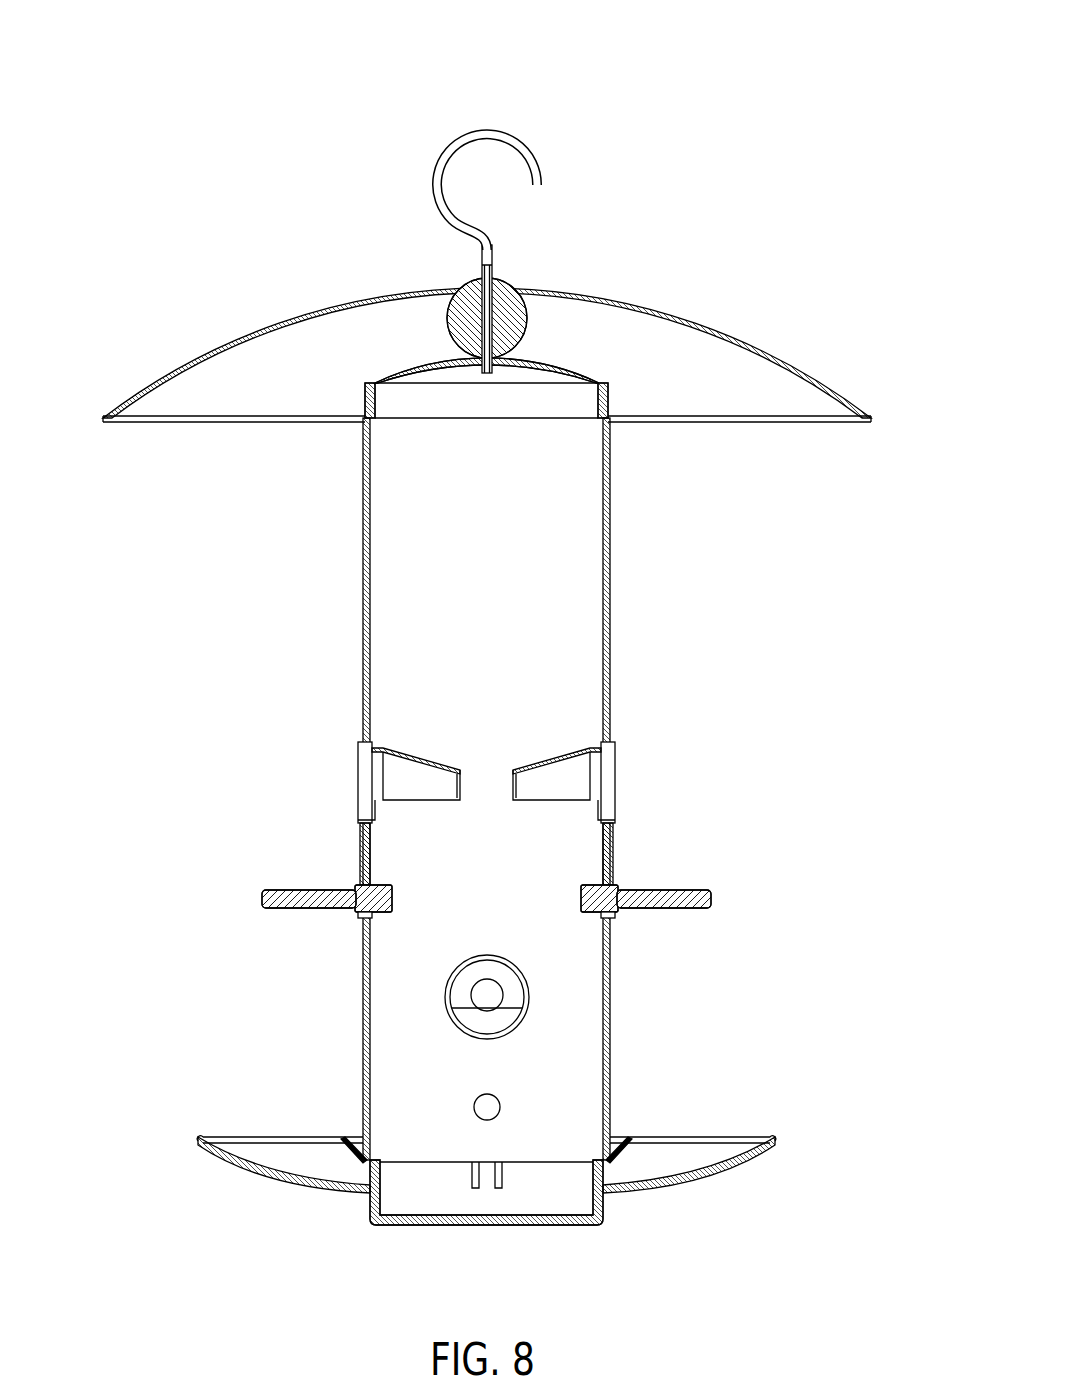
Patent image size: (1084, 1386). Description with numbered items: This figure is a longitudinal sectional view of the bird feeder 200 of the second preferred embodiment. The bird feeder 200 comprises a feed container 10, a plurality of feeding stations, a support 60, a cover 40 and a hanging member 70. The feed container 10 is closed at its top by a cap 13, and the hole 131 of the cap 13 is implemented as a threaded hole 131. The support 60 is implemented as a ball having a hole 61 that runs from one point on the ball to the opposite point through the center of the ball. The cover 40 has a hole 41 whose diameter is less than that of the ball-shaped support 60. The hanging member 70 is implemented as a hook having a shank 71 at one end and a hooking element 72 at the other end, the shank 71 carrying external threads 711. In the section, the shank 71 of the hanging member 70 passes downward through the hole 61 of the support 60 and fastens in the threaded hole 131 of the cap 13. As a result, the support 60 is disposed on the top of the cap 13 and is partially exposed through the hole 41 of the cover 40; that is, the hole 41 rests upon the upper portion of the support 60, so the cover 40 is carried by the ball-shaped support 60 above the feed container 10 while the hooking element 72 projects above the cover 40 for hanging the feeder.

The bird feeder 200 is at (818, 80).
The hanging member 70 is at (523, 281).
The hooking element 72 is at (489, 130).
The shank 71 is at (492, 247).
The external threads 711 is at (493, 370).
The support 60 is at (513, 320).
The hole 61 is at (463, 330).
The cover 40 is at (777, 343).
The hole 41 is at (432, 290).
The cap 13 is at (407, 363).
The threaded hole 131 is at (483, 363).
The feed container 10 is at (350, 656).